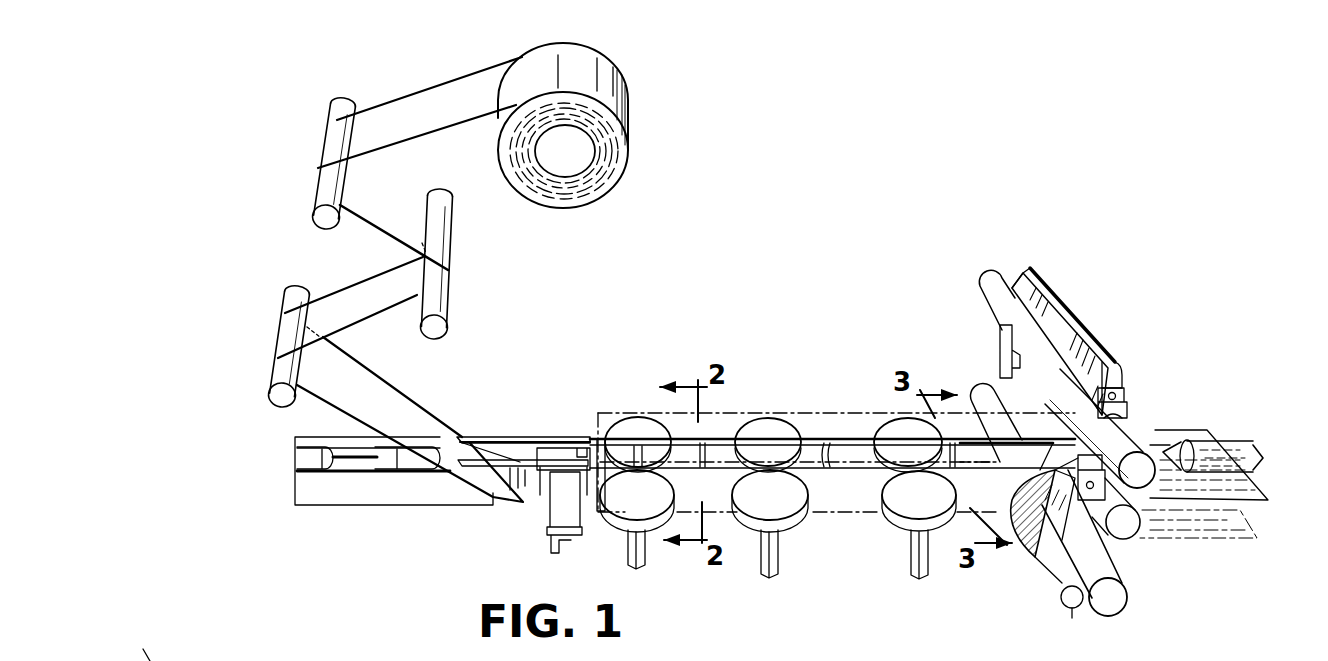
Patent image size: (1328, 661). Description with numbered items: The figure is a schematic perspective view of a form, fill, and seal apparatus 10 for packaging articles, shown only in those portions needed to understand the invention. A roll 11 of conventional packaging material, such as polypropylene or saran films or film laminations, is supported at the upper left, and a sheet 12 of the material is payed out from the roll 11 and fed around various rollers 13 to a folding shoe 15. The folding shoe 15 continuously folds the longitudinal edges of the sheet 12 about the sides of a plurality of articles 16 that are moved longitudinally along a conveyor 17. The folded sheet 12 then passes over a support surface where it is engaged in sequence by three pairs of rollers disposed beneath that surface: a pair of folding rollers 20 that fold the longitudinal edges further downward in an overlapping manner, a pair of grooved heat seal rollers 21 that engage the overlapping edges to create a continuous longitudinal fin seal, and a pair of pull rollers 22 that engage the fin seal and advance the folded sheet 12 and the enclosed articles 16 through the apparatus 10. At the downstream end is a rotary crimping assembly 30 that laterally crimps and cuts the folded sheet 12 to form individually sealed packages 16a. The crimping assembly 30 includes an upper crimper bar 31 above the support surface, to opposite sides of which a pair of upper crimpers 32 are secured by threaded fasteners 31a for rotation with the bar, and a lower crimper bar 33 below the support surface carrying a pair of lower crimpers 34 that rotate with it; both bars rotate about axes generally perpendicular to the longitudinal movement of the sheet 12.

The form, fill, and seal apparatus 10 is at (892, 218).
The roll 11 is at (625, 133).
The sheet 12 is at (415, 110).
The rollers 13 is at (341, 105).
The folding shoe 15 is at (527, 470).
The articles 16 is at (397, 457).
The individually sealed packages 16a is at (1228, 455).
The conveyor 17 is at (320, 493).
The folding rollers 20 is at (637, 432).
The grooved heat seal rollers 21 is at (773, 432).
The pull rollers 22 is at (897, 432).
The rotary crimping assembly 30 is at (1087, 270).
The upper crimper bar 31 is at (1128, 432).
The threaded fasteners 31a is at (1118, 398).
The upper crimpers 32 is at (1103, 318).
The lower crimper bar 33 is at (1110, 600).
The lower crimpers 34 is at (1105, 512).